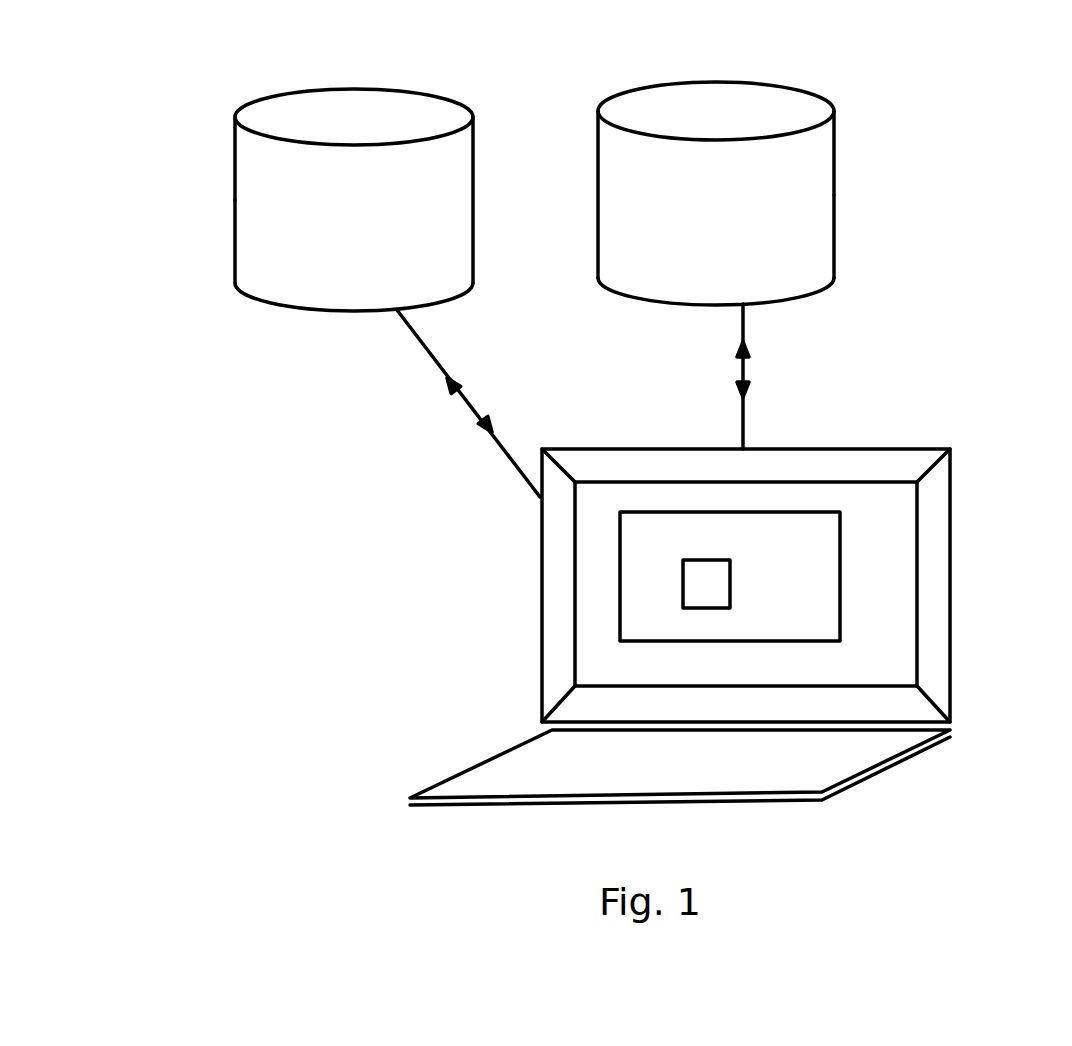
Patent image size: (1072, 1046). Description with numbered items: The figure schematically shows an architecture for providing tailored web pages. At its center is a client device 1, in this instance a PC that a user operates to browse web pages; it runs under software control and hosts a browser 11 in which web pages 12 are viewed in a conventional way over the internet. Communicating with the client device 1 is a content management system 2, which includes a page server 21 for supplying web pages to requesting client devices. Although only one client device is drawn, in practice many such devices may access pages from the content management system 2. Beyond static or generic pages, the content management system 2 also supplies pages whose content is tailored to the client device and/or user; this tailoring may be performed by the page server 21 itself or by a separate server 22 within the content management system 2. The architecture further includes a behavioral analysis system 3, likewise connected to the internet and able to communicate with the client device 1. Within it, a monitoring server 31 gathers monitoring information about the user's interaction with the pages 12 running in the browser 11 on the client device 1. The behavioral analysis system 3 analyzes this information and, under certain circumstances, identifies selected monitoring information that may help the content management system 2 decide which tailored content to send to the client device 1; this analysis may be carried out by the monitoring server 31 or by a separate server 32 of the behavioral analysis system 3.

The client device 1 is at (737, 627).
The browser 11 is at (808, 590).
The web page 12 is at (697, 593).
The content management system 2 is at (375, 103).
The page server 21 is at (268, 167).
The separate server 22 is at (268, 247).
The behavioral analysis system 3 is at (692, 113).
The monitoring server 31 is at (817, 175).
The separate server 32 is at (817, 238).